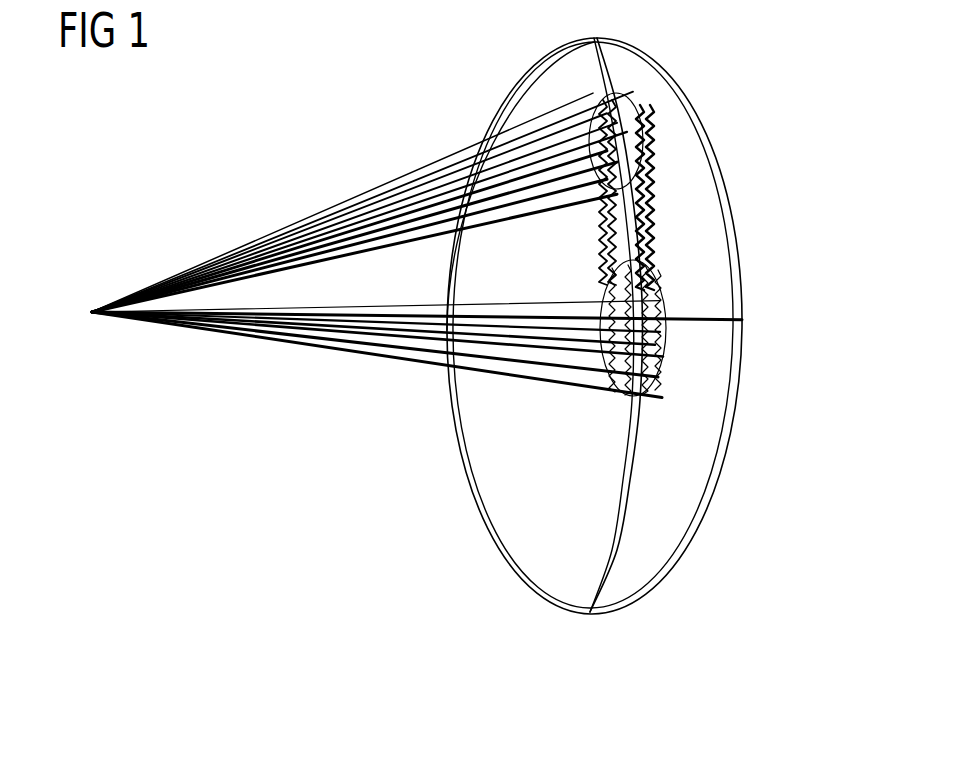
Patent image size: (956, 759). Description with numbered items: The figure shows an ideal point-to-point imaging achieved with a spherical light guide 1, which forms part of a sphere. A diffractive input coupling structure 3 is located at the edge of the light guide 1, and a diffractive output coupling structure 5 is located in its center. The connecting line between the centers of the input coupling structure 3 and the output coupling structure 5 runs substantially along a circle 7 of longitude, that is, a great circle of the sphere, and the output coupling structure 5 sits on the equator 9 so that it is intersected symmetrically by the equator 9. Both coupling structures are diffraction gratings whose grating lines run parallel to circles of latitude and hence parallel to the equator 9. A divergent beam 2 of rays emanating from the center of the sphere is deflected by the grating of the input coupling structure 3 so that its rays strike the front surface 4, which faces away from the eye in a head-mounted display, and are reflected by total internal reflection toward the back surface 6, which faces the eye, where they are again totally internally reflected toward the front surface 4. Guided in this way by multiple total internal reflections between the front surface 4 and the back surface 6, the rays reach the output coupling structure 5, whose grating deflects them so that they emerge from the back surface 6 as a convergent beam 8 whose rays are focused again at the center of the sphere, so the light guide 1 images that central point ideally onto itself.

The spherical light guide 1 is at (668, 105).
The divergent beam of rays 2 is at (325, 220).
The diffractive input coupling structure 3 is at (653, 180).
The front surface 4 is at (668, 514).
The diffractive output coupling structure 5 is at (663, 353).
The back surface 6 is at (527, 523).
The circle of longitude 7 is at (628, 452).
The convergent beam of rays 8 is at (325, 343).
The equator 9 is at (702, 318).